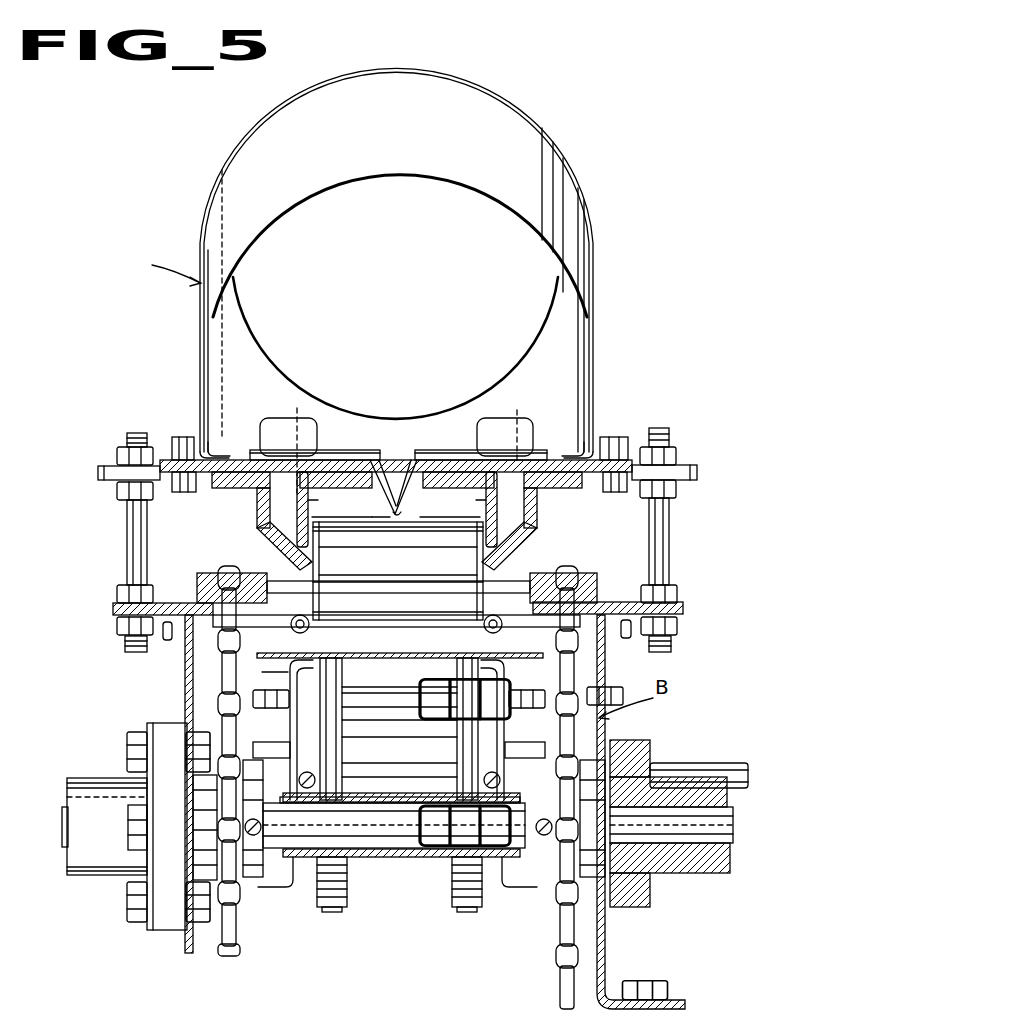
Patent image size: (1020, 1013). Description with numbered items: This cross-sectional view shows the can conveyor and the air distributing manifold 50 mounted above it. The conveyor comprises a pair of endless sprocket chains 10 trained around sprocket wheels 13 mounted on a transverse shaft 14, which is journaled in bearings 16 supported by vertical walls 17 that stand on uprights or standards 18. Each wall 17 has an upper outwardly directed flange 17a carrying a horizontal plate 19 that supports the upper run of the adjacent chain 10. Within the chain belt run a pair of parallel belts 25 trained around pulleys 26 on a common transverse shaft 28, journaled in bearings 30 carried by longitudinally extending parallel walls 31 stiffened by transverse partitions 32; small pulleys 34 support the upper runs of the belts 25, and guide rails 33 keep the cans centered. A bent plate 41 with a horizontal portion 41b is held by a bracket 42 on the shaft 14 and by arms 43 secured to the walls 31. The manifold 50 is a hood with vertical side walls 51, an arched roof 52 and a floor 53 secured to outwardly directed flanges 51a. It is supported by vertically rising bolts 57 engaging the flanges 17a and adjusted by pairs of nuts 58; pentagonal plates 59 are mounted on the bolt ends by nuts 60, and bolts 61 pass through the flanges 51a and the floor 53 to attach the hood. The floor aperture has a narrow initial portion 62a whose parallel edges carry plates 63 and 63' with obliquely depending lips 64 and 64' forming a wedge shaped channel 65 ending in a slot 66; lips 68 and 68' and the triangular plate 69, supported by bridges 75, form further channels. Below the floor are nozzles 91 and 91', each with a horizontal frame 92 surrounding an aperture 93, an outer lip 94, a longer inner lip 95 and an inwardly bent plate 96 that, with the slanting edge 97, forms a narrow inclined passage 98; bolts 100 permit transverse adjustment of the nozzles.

The endless sprocket chains 10 is at (205, 575).
The sprocket wheels 13 is at (243, 938).
The transverse shaft 14 is at (415, 840).
The bearings 16 is at (96, 865).
The vertical walls 17 is at (185, 698).
The upper outwardly directed flange 17a is at (113, 609).
The uprights or standards 18 is at (683, 1004).
The horizontal plate 19 is at (113, 600).
The parallel belts 25 is at (330, 752).
The pulleys 26 is at (455, 900).
The transverse shaft 28 is at (700, 768).
The bearings 30 is at (266, 764).
The longitudinally extending parallel walls 31 is at (285, 887).
The transverse partitions 32 is at (380, 715).
The guide rails 33 is at (295, 617).
The small pulleys 34 is at (312, 700).
The bent plate 41 is at (272, 655).
The horizontal portion 41b is at (289, 649).
The bracket 42 is at (378, 860).
The arms 43 is at (290, 678).
The air distributing manifold 50 is at (565, 178).
The vertical side walls 51 is at (204, 320).
The outwardly directed flanges 51a is at (170, 453).
The arched roof or ceiling 52 is at (512, 110).
The floor 53 is at (240, 460).
The bolts 57 is at (130, 525).
The nuts 58 is at (118, 592).
The pentagonal plates 59 is at (98, 472).
The nuts 60 is at (120, 452).
The bolts 61 is at (178, 490).
The initial portion of aperture 62a is at (369, 513).
The plate 63 is at (317, 439).
The plate 63' is at (481, 435).
The obliquely depending lip 64 is at (395, 464).
The obliquely depending lip 64' is at (419, 464).
The wedge shaped channel 65 is at (458, 487).
The longitudinal slot or nozzle 66 is at (412, 513).
The obliquely depending lip 68 is at (336, 487).
The obliquely depending lip 68' is at (399, 500).
The triangular plate 69 is at (396, 470).
The braces or bridges 75 is at (486, 420).
The nozzle 91 is at (238, 533).
The nozzle 91' is at (538, 546).
The horizontal frame 92 is at (399, 493).
The apertures 93 is at (384, 509).
The outer lip 94 is at (397, 493).
The inner lip 95 is at (414, 497).
The inwardly bent sheet or plate 96 is at (257, 522).
The inwardly slanting edge 97 is at (460, 556).
The inwardly inclined passage 98 is at (322, 575).
The bolts 100 is at (542, 440).